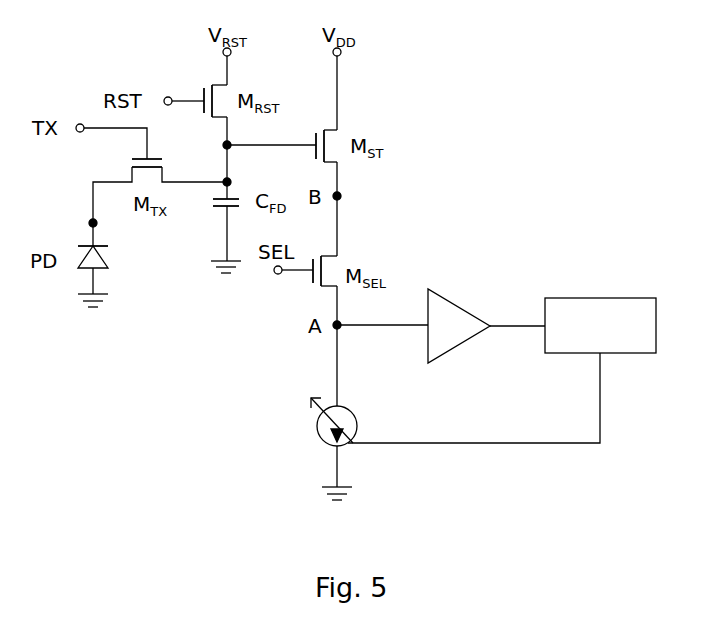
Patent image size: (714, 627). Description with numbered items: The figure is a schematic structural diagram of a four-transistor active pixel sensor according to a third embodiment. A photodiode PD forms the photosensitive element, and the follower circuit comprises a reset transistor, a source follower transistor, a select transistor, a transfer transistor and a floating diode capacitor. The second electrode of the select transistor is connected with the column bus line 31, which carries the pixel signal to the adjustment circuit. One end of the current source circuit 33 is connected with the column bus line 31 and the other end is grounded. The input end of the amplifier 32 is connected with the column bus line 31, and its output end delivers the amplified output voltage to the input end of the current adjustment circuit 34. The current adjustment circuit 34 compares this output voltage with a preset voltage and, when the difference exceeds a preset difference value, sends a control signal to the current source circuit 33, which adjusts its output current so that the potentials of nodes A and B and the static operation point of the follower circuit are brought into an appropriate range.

The column bus line 31 is at (335, 394).
The amplifier 32 is at (433, 306).
The current source circuit 33 is at (344, 422).
The current adjustment circuit 34 is at (593, 307).